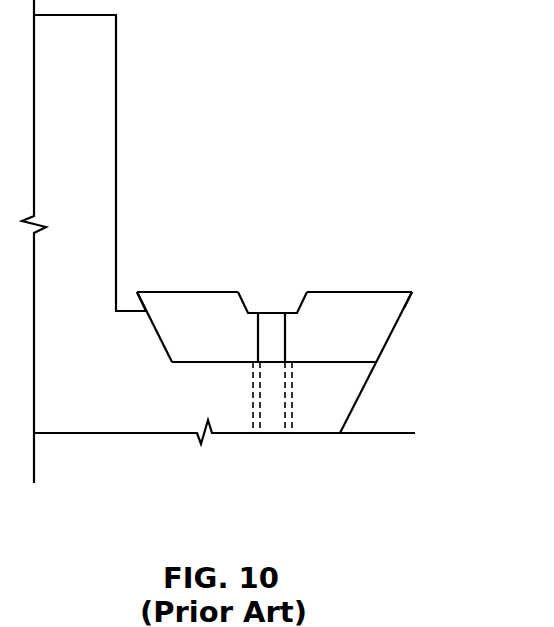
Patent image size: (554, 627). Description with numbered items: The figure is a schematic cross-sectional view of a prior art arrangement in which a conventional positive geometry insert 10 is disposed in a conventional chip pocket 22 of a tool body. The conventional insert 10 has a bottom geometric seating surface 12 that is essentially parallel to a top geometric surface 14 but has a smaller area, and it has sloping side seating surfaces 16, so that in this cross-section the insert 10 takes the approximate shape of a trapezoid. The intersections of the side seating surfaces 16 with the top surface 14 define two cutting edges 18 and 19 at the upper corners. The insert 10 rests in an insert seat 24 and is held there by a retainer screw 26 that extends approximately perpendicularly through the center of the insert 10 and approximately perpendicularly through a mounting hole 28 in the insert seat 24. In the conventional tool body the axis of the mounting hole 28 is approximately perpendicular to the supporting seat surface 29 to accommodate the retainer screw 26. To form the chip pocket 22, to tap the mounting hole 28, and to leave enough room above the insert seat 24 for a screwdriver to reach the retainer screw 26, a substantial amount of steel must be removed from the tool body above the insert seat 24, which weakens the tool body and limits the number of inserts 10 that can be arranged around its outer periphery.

The conventional positive geometry insert 10 is at (355, 286).
The bottom geometric seating surface 12 is at (343, 362).
The top geometric surface 14 is at (190, 292).
The side seating surfaces 16 is at (152, 327).
The cutting edge 18 is at (413, 292).
The cutting edge 19 is at (137, 292).
The conventional chip pocket 22 is at (149, 89).
The insert seat 24 is at (187, 393).
The retainer screw 26 is at (272, 328).
The mounting hole 28 is at (268, 415).
The supporting seat surface 29 is at (317, 365).